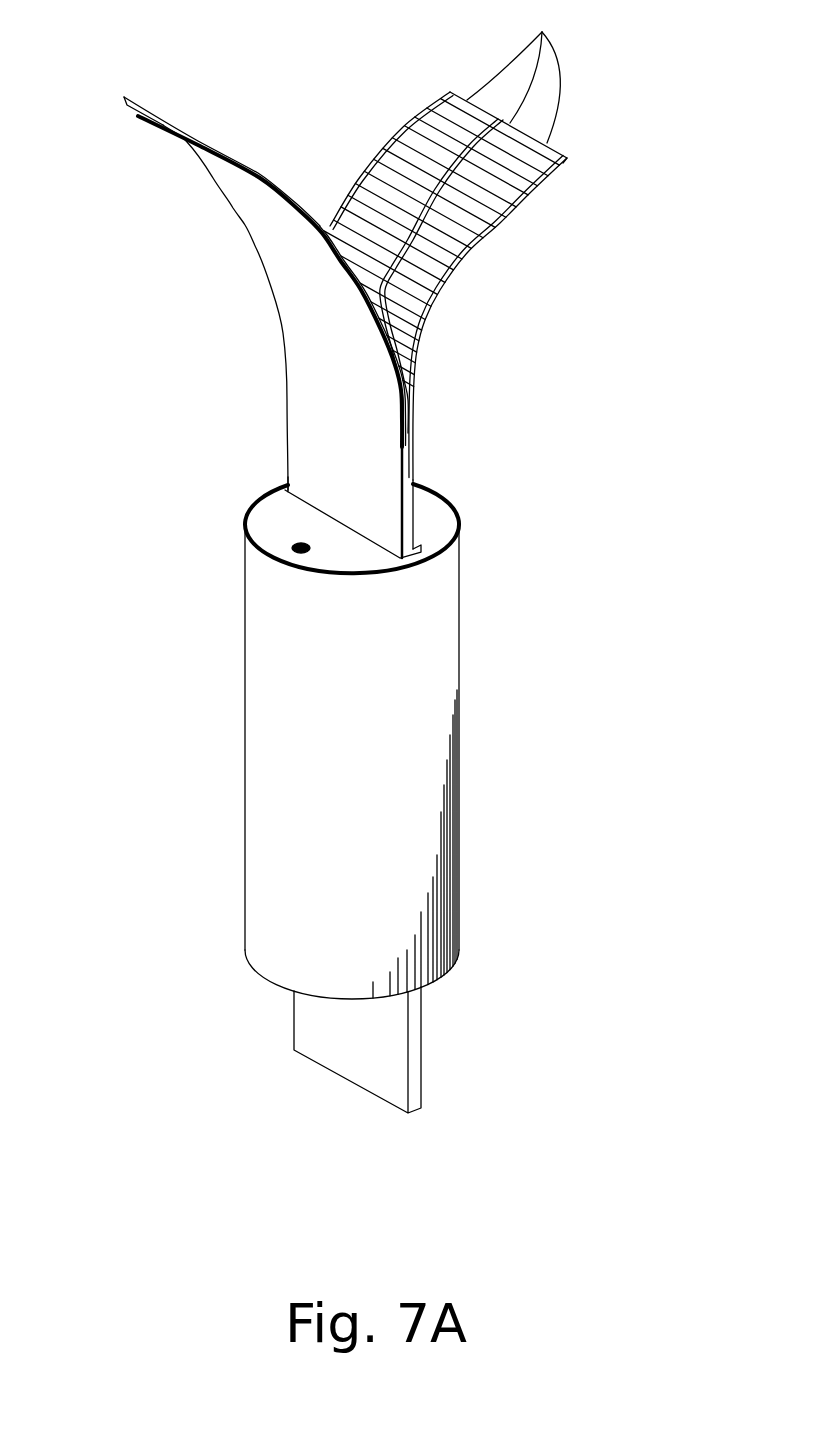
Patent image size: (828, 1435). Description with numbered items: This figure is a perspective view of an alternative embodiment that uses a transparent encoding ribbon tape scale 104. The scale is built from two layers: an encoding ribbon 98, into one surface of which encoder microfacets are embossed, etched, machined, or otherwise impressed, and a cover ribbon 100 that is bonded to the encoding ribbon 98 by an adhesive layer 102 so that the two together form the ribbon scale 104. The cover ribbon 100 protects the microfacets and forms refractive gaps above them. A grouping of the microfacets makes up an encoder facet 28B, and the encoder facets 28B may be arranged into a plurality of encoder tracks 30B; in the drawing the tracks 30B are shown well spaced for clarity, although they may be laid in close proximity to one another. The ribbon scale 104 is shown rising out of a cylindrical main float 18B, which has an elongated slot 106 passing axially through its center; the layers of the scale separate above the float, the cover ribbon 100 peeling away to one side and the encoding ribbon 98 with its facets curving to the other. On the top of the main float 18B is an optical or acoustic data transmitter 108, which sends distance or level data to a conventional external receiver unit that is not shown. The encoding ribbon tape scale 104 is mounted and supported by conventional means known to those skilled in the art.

The main float 18B is at (460, 678).
The encoder facet 28B is at (505, 173).
The encoder track 30B is at (516, 71).
The encoding ribbon 98 is at (442, 303).
The cover ribbon 100 is at (263, 267).
The adhesive layer 102 is at (270, 176).
The encoding ribbon tape scale 104 is at (413, 458).
The elongated slot 106 is at (285, 490).
The data transmitter 108 is at (300, 556).